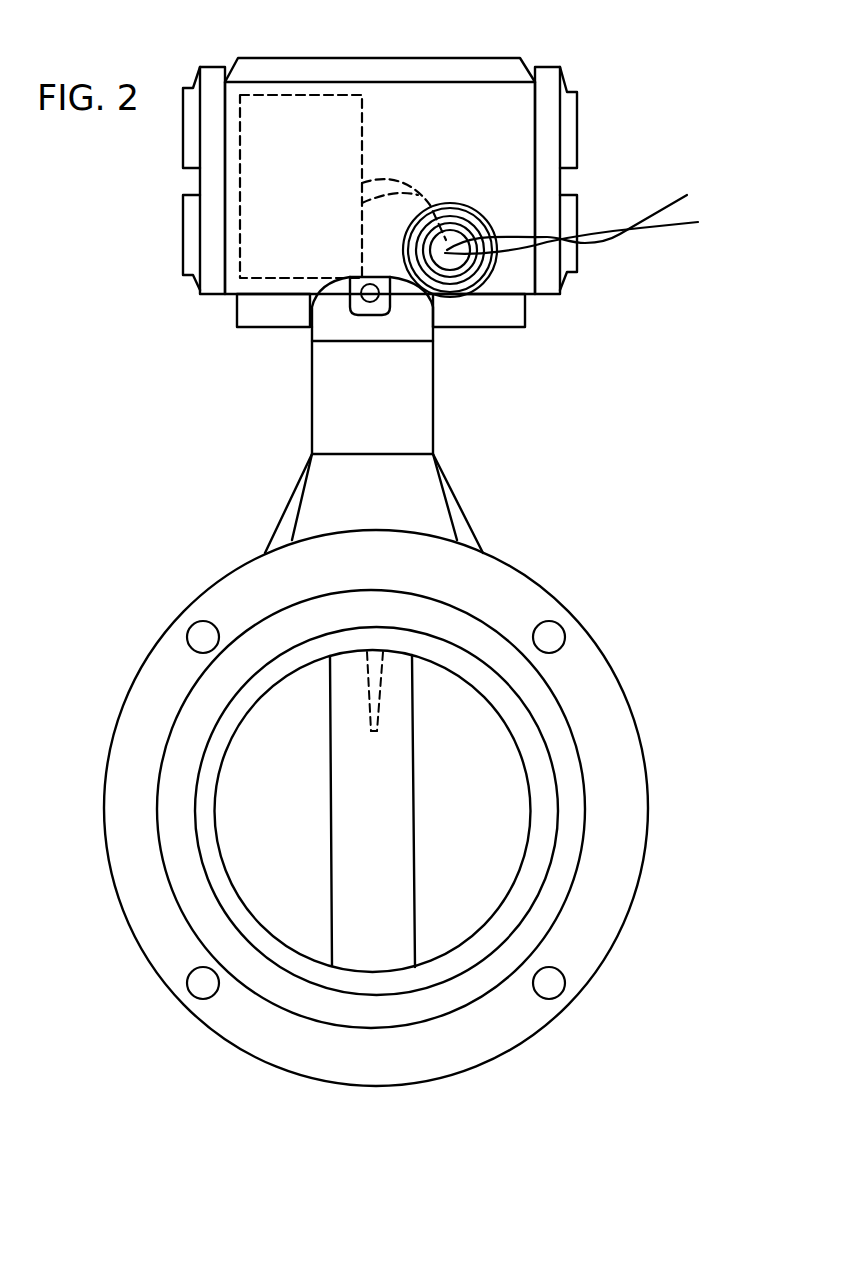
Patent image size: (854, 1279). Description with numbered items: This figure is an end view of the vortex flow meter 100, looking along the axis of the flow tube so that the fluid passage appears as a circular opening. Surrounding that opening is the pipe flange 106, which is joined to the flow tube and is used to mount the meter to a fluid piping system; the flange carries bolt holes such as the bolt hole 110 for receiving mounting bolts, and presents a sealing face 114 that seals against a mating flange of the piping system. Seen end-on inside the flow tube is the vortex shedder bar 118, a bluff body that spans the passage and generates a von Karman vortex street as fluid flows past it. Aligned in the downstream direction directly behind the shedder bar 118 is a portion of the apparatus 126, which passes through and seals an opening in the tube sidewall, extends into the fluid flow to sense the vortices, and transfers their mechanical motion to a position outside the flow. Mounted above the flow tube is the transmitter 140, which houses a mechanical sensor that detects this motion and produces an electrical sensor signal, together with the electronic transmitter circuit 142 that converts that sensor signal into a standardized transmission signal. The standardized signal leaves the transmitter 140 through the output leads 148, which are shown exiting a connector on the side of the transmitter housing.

The vortex flow meter 100 is at (656, 143).
The pipe flange 106 is at (628, 700).
The bolt hole 110 is at (562, 975).
The sealing face 114 is at (568, 798).
The vortex shedder bar 118 is at (360, 884).
The apparatus 126 is at (367, 700).
The transmitter 140 is at (357, 58).
The electronic transmitter circuit 142 is at (240, 178).
The output leads 148 is at (640, 230).